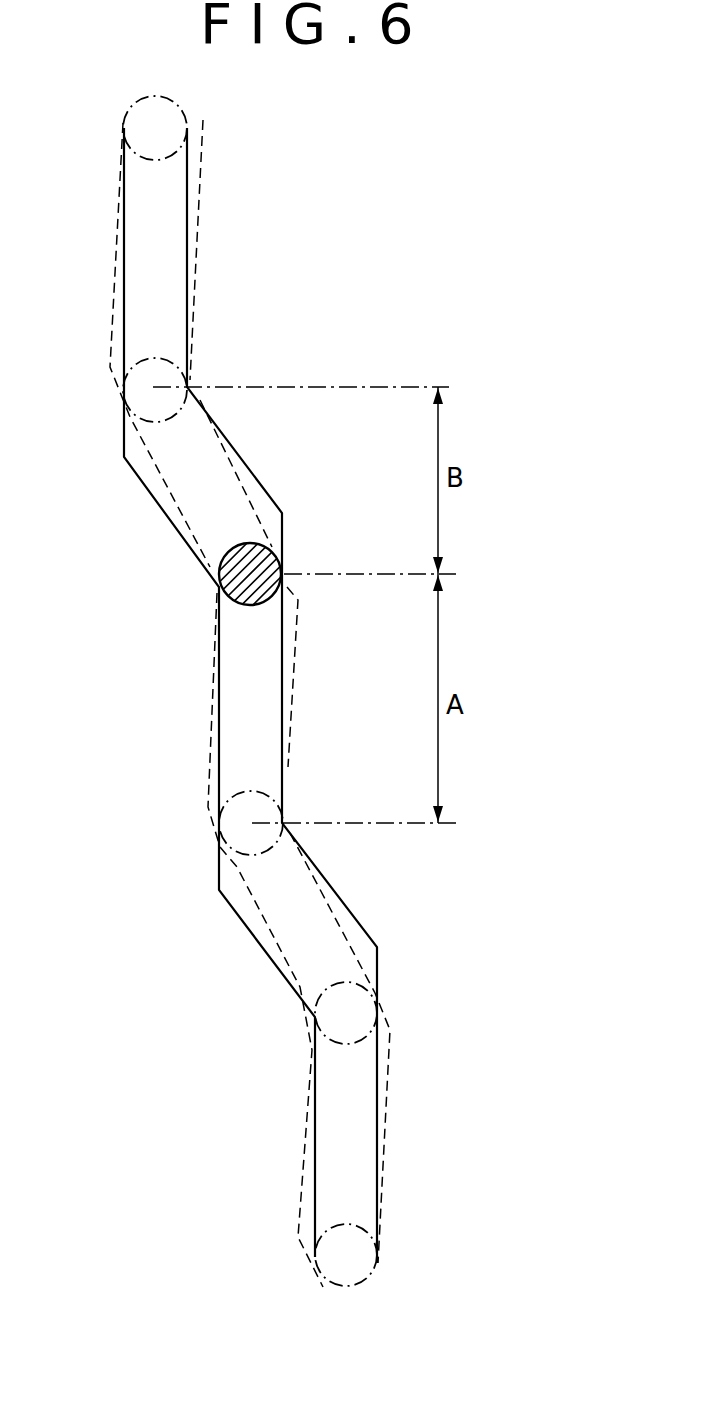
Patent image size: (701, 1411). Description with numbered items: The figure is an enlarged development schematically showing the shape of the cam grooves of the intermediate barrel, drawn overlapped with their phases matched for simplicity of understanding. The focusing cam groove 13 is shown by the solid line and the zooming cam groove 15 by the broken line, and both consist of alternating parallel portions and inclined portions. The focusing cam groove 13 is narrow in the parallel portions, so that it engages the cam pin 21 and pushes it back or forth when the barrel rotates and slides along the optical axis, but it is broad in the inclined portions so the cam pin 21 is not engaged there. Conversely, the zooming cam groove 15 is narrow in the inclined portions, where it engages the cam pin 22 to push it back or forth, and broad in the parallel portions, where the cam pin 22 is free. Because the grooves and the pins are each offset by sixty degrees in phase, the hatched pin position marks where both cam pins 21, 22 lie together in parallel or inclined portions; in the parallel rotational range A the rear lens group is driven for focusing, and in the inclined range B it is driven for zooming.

The focusing cam groove 13 is at (187, 198).
The zooming cam groove 15 is at (190, 252).
The cam pin 21 is at (184, 576).
The cam pin 22 is at (217, 585).